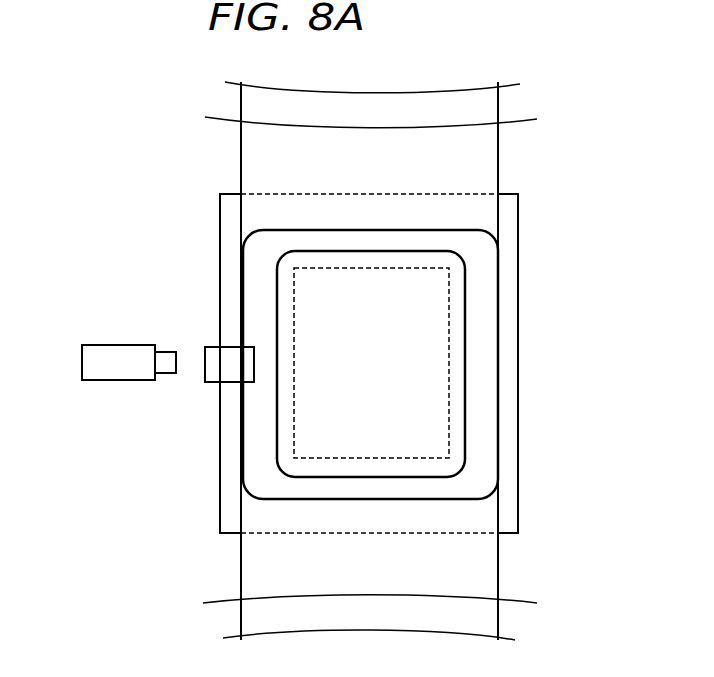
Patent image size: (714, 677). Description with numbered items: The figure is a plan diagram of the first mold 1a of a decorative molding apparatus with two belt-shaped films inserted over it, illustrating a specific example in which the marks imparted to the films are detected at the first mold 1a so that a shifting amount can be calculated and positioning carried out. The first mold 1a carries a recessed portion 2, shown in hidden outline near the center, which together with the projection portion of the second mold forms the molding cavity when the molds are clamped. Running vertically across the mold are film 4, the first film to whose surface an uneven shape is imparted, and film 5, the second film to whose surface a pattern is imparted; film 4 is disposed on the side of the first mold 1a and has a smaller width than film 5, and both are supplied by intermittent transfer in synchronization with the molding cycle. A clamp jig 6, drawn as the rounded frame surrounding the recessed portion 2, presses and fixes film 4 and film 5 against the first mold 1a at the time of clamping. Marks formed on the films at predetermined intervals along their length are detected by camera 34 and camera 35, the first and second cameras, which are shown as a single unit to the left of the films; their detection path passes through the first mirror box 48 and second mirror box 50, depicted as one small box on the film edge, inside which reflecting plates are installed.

The first mold 1a is at (518, 369).
The recessed portion 2 is at (391, 380).
The film 4 is at (493, 104).
The film 5 is at (493, 170).
The clamp jig 6 is at (491, 304).
The camera 34 is at (105, 368).
The camera 35 is at (129, 362).
The first mirror box 48 is at (213, 355).
The second mirror box 50 is at (229, 364).